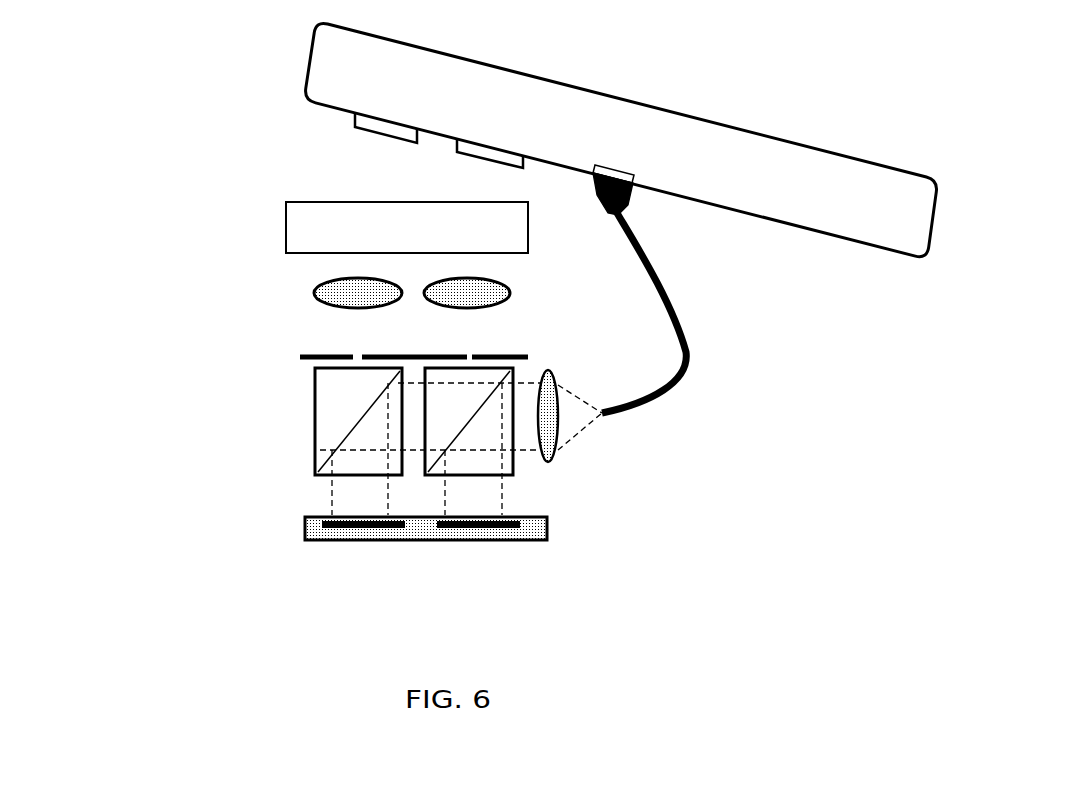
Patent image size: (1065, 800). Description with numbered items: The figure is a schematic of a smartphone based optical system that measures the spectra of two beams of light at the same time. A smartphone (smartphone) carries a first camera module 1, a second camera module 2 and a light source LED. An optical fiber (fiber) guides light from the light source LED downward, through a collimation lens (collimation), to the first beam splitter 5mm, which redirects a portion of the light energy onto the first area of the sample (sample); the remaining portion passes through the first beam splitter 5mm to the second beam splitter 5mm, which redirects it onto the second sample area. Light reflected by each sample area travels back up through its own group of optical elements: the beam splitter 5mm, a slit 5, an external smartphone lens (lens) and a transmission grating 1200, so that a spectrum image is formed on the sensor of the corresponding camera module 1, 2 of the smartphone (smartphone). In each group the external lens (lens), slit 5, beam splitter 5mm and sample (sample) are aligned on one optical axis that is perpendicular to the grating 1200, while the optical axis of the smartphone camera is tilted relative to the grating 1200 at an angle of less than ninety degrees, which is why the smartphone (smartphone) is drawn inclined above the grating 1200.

The element smartphone is at (621, 139).
The first camera module 1 is at (386, 120).
The second camera module 2 is at (490, 145).
The light source LED is at (616, 181).
The optical fiber is at (688, 355).
The transmission grating 1200 is at (284, 228).
The external lens is at (312, 293).
The slit 5 is at (297, 357).
The beam splitter 5mm is at (313, 425).
The collimation lens collimation is at (551, 470).
The element sample is at (303, 530).